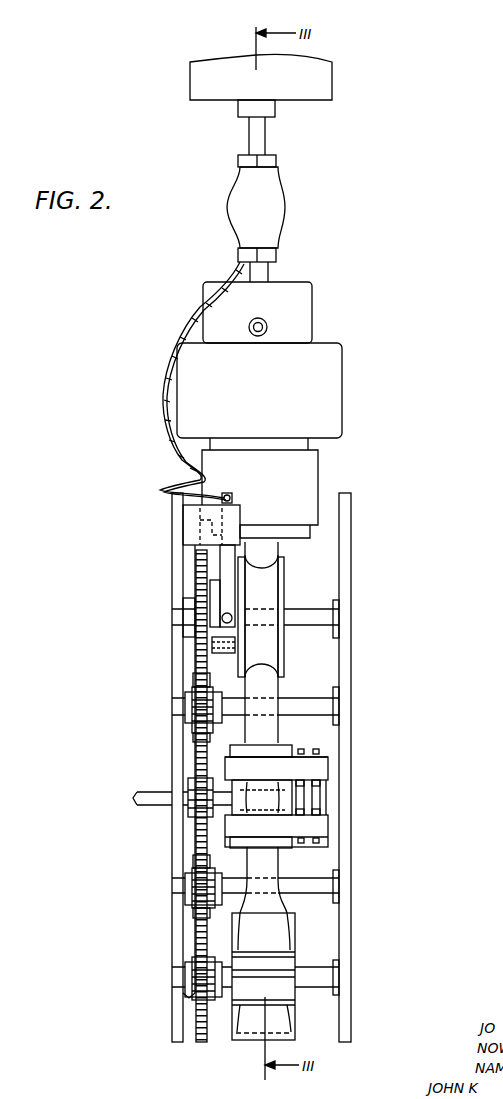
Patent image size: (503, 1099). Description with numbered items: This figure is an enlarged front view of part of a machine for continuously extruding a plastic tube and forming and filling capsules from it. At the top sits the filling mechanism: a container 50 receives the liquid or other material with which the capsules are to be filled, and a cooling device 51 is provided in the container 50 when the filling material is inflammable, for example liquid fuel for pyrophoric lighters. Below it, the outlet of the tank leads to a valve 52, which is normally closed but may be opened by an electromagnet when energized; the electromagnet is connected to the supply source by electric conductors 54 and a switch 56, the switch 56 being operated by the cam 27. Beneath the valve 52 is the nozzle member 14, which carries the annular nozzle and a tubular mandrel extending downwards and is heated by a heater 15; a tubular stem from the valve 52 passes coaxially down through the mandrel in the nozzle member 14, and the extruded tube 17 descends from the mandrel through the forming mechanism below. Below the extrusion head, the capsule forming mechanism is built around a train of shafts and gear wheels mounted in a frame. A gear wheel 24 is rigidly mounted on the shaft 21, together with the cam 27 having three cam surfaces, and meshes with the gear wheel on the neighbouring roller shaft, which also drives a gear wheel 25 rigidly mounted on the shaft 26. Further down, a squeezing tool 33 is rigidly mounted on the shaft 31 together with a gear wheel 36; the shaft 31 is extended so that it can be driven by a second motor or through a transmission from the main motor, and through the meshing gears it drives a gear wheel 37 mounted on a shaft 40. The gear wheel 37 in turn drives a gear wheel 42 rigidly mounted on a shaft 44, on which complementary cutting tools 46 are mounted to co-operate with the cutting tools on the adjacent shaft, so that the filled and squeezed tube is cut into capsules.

The nozzle member 14 is at (263, 442).
The heater 15 is at (293, 490).
The plunger column 17 is at (270, 577).
The rotatable shaft 21 is at (305, 620).
The gear wheel 24 is at (215, 598).
The gear wheel 25 is at (203, 723).
The rotatable shaft 26 is at (310, 710).
The cam 27 is at (227, 648).
The rotatable shaft 31 is at (160, 795).
The squeezing tool 33 is at (287, 768).
The gear wheel 36 is at (200, 838).
The gear wheel 37 is at (197, 897).
The shaft 40 is at (310, 885).
The gear wheel 42 is at (200, 948).
The rotatable shaft 44 is at (315, 975).
The complementary cutting tools 46 is at (297, 988).
The container 50 is at (313, 77).
The cooling device 51 is at (258, 134).
The valve 52 is at (263, 212).
The electric conductors 54 is at (193, 485).
The switch 56 is at (227, 565).